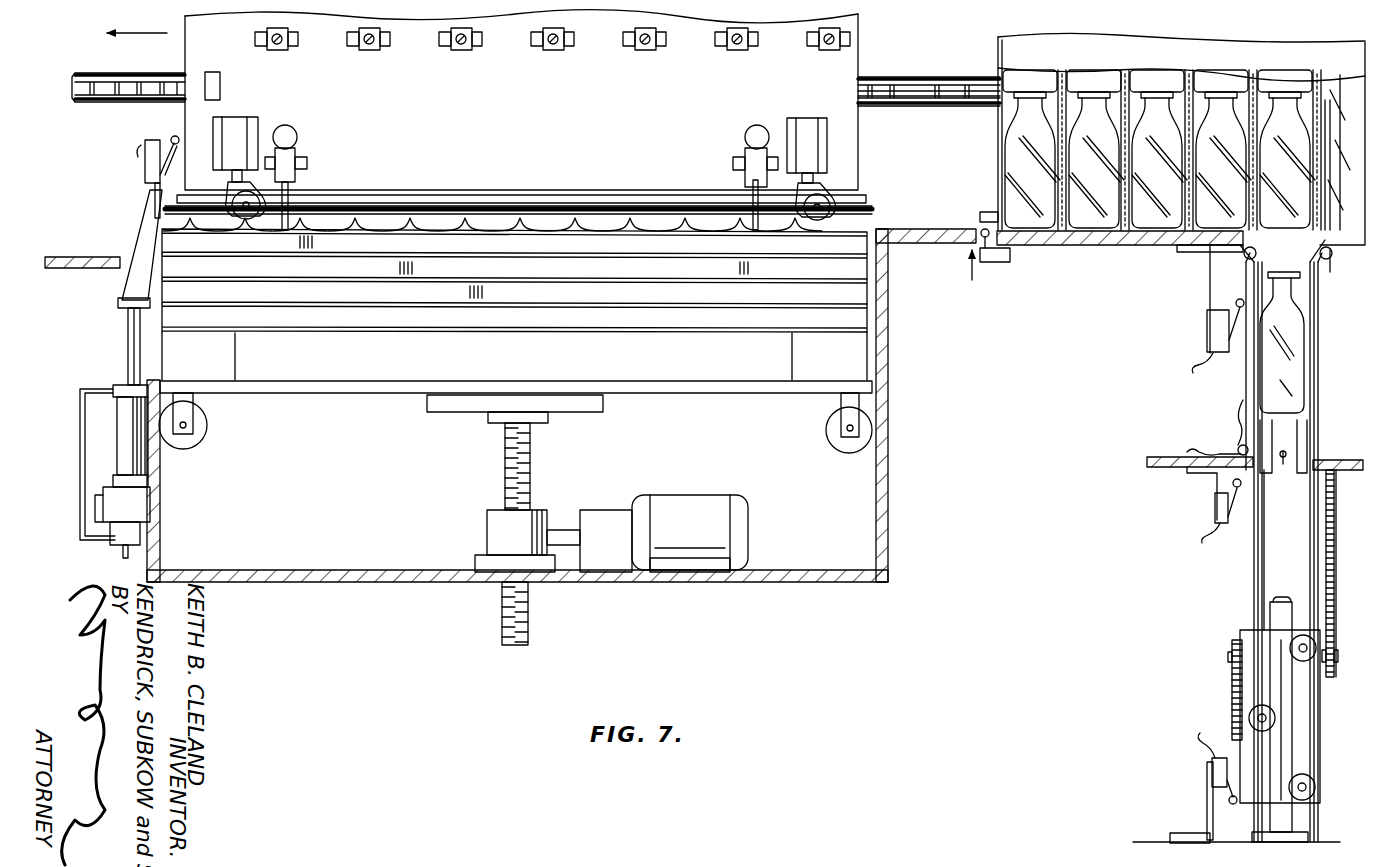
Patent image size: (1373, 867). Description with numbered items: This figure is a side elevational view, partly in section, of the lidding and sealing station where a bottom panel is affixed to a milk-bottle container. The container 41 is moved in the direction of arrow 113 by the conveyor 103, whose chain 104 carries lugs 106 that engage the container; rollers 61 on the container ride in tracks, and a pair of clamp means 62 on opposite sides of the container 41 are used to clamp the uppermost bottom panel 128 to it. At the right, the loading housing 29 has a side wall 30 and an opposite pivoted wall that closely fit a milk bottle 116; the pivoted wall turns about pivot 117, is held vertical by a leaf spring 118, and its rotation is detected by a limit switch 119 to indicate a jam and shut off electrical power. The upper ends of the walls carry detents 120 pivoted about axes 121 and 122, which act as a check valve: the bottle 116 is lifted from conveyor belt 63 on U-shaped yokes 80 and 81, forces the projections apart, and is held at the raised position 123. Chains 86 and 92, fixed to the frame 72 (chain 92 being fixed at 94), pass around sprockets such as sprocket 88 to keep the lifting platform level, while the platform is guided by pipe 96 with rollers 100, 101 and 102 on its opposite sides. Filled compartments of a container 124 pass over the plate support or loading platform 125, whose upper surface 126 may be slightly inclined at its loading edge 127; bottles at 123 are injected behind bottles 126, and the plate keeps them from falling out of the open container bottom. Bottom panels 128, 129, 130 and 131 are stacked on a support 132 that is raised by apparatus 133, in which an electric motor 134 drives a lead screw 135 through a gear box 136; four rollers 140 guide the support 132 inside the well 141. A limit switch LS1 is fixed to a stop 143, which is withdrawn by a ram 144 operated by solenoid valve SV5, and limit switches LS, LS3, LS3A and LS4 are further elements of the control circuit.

The loading housing 29 is at (1322, 382).
The loading housing side wall 30 is at (1318, 314).
The container 41 is at (862, 60).
The rollers 61 is at (229, 188).
The clamp means 62 is at (300, 150).
The V belt 63 is at (1282, 464).
The frame 72 is at (1167, 468).
The U-shaped yoke 80 is at (1260, 556).
The U-shaped yoke 81 is at (1302, 527).
The chain 86 is at (1232, 690).
The sprocket 88 is at (1240, 637).
The chain 92 is at (1332, 556).
The chain fixing point 94 is at (1332, 480).
The cylindrical rod or pipe 96 is at (1283, 703).
The roller 100 is at (1314, 636).
The roller 101 is at (1250, 718).
The roller 102 is at (1312, 785).
The conveyor 103 is at (122, 106).
The chain 104 is at (890, 96).
The lugs 106 is at (868, 100).
The arrow 113 is at (140, 36).
The milk bottle 116 is at (1303, 302).
The pivot 117 is at (1240, 437).
The leaf spring 118 is at (1207, 448).
The limit switch 119 is at (1230, 302).
The detent or projection 120 is at (1256, 256).
The pivot axis 121 is at (1332, 256).
The pivot axis 122 is at (1248, 250).
The milk bottle position 123 is at (1303, 123).
The container 124 is at (996, 135).
The plate support or loading platform 125 is at (979, 281).
The milk bottles / upper surface of plate 126 is at (1318, 95).
The loading edge 127 is at (1163, 247).
The bottom panel 128 is at (860, 236).
The bottom panel 129 is at (860, 260).
The bottom panel 130 is at (860, 288).
The bottom panel 131 is at (860, 314).
The support 132 is at (698, 388).
The raising apparatus 133 is at (592, 480).
The electric motor 134 is at (708, 494).
The lead screw 135 is at (502, 455).
The gear box 136 is at (486, 523).
The rollers 140 is at (200, 440).
The well 141 is at (852, 530).
The stop 143 is at (130, 286).
The ram 144 is at (122, 400).
The limit switch LS is at (222, 86).
The limit switch LS1 is at (150, 165).
The limit switch LS3 is at (1216, 510).
The limit switch LS3A is at (1010, 258).
The limit switch LS4 is at (1212, 794).
The solenoid valve SV5 is at (115, 545).